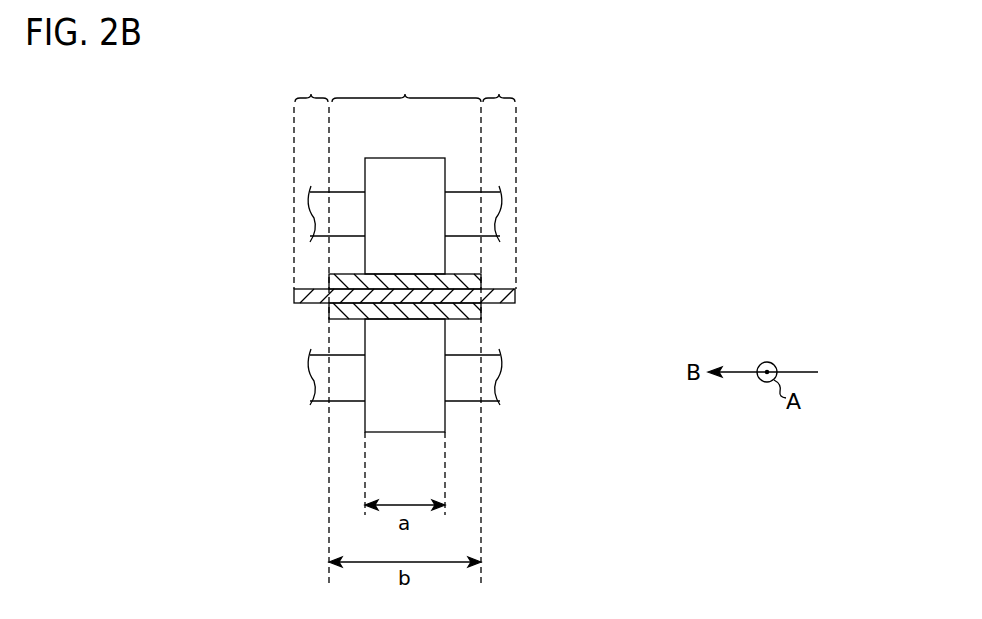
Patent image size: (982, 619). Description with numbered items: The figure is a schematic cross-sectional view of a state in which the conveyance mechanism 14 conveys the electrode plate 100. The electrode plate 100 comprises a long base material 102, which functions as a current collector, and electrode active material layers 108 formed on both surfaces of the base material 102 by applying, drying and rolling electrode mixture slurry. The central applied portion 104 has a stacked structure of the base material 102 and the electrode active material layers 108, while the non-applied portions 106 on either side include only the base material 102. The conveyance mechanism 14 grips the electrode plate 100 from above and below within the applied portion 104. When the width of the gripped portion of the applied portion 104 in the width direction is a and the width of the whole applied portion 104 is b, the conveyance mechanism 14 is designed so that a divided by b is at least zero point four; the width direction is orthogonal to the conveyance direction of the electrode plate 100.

The conveyance mechanism 14 is at (445, 173).
The electrode plate 100 is at (520, 301).
The base material 102 is at (515, 292).
The applied portion 104 is at (406, 82).
The non-applied portion 106 is at (406, 82).
The electrode active material layers 108 is at (339, 273).